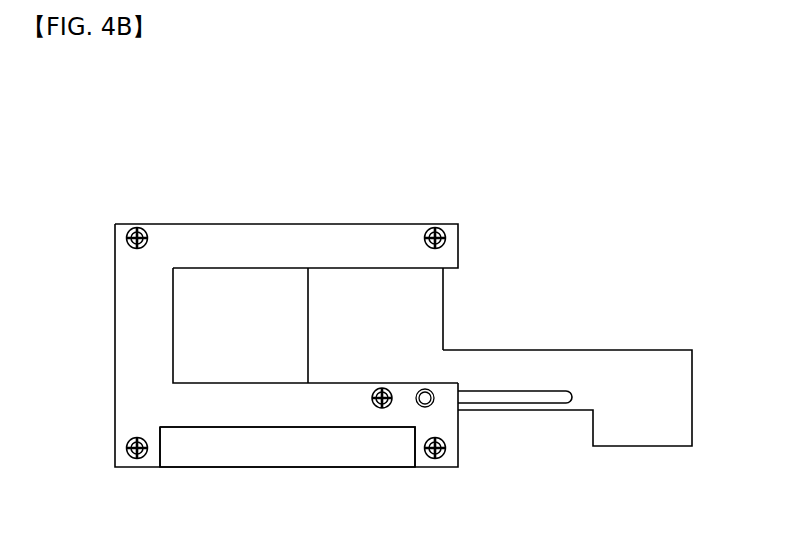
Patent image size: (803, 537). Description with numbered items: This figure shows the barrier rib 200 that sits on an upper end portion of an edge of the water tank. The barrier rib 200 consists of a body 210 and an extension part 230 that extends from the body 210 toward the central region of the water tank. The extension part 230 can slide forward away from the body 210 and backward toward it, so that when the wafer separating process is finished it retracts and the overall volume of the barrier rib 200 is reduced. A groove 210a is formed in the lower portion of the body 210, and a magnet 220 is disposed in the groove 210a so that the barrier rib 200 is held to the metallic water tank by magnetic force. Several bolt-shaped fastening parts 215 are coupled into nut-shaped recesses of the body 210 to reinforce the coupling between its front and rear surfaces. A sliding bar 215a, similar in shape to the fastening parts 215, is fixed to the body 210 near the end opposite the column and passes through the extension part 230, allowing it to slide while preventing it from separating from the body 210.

The barrier rib 200 is at (431, 316).
The body 210 is at (249, 245).
The groove 210a is at (281, 439).
The fastening parts 215 is at (438, 437).
The sliding bar 215a is at (375, 409).
The magnet 220 is at (197, 450).
The extension part 230 is at (678, 397).